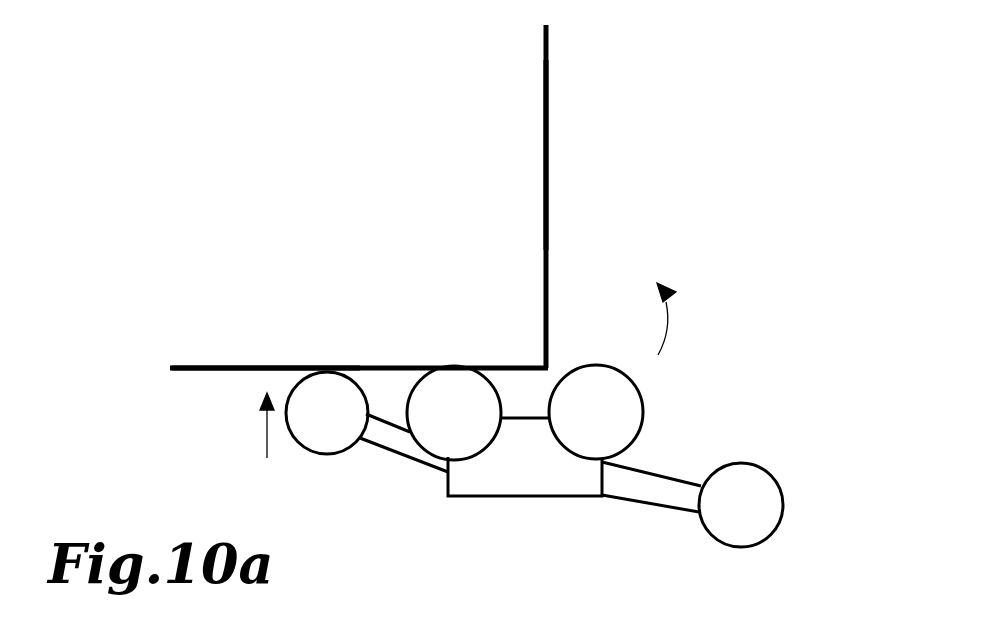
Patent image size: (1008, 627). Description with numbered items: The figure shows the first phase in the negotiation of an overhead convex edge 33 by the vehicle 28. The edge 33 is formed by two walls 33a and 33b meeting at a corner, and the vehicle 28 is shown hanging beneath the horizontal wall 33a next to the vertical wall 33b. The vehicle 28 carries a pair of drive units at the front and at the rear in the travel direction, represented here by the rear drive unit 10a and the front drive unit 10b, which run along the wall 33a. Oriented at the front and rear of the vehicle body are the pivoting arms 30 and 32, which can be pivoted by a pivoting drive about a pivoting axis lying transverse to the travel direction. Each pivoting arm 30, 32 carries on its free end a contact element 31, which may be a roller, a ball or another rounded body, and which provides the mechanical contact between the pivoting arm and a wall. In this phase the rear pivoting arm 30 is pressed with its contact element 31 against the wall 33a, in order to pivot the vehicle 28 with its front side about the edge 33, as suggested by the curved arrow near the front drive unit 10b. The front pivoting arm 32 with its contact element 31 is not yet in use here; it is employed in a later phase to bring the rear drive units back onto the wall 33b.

The rear drive unit 10a is at (462, 395).
The front drive unit 10b is at (628, 407).
The vehicle 28 is at (503, 522).
The rear pivoting arm 30 is at (392, 447).
The contact element 31 is at (323, 400).
The front pivoting arm 32 is at (658, 495).
The convex edge 33 is at (462, 210).
The wall 33a is at (190, 373).
The wall 33b is at (548, 163).